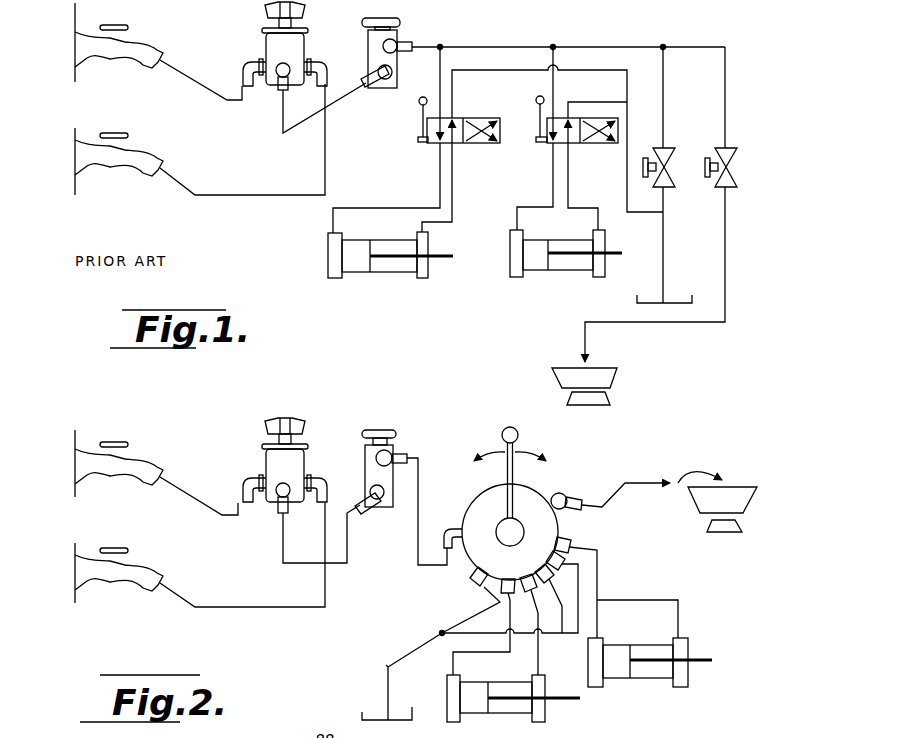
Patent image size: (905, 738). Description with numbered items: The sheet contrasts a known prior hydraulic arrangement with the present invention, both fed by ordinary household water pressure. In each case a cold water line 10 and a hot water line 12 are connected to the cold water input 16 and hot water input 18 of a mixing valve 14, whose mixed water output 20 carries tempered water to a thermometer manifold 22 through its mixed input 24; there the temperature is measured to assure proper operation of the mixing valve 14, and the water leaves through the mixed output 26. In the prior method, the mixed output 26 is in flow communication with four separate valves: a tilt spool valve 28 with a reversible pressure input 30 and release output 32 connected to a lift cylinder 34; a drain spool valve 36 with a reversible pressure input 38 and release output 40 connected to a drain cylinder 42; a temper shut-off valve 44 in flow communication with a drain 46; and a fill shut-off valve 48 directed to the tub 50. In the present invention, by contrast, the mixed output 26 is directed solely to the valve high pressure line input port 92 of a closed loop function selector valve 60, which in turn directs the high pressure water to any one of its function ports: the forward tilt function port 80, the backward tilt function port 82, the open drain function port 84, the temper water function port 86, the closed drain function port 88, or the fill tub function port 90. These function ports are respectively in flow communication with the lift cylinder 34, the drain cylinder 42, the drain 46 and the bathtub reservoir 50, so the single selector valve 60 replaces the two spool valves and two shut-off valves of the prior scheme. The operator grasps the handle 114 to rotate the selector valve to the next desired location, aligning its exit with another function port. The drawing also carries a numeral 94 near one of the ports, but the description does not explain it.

In FIG. 1, the cold water line 10 is at (72, 42).
In FIG. 2, the cold water line 10 is at (75, 452).
In FIG. 1, the hot water line 12 is at (72, 178).
In FIG. 2, the hot water line 12 is at (75, 574).
In FIG. 1, the mixing valve 14 is at (289, 3).
In FIG. 2, the mixing valve 14 is at (288, 418).
In FIG. 1, the cold water input 16 is at (243, 66).
In FIG. 2, the cold water input 16 is at (238, 478).
In FIG. 1, the hot water input 18 is at (325, 68).
In FIG. 2, the hot water input 18 is at (328, 478).
In FIG. 1, the mixed water output 20 is at (276, 90).
In FIG. 2, the mixed water output 20 is at (274, 506).
In FIG. 1, the thermometer manifold 22 is at (386, 18).
In FIG. 2, the thermometer manifold 22 is at (380, 430).
In FIG. 1, the mixed input 24 is at (375, 88).
In FIG. 2, the mixed input 24 is at (373, 505).
In FIG. 1, the mixed output 26 is at (406, 42).
In FIG. 2, the mixed output 26 is at (405, 455).
In FIG. 1, the tilt spool valve 28 is at (500, 135).
In FIG. 1, the pressure input 30 is at (436, 78).
In FIG. 1, the release output 32 is at (452, 170).
In FIG. 1, the lift cylinder 34 is at (378, 273).
In FIG. 2, the lift cylinder 34 is at (545, 720).
In FIG. 1, the drain spool valve 36 is at (608, 143).
In FIG. 1, the pressure input 38 is at (553, 80).
In FIG. 1, the release output 40 is at (572, 184).
In FIG. 1, the drain cylinder 42 is at (555, 275).
In FIG. 2, the drain cylinder 42 is at (655, 679).
In FIG. 1, the temper shut-off valve 44 is at (673, 147).
In FIG. 1, the drain 46 is at (673, 297).
In FIG. 2, the drain 46 is at (358, 712).
In FIG. 1, the fill shut-off valve 48 is at (733, 147).
In FIG. 1, the tub 50 is at (618, 376).
In FIG. 2, the tub 50 is at (697, 512).
In FIG. 2, the closed loop function selector valve 60 is at (503, 486).
In FIG. 2, the forward tilt function port 80 is at (500, 603).
In FIG. 2, the backward tilt function port 82 is at (529, 597).
In FIG. 2, the open drain function port 84 is at (558, 604).
In FIG. 2, the temper water function port 86 is at (582, 562).
In FIG. 2, the closed drain function port 88 is at (575, 540).
In FIG. 2, the fill tub function port 90 is at (557, 494).
In FIG. 2, the valve high pressure line input port 92 is at (452, 529).
In FIG. 2, the port 94 is at (467, 587).
In FIG. 2, the handle 114 is at (518, 440).